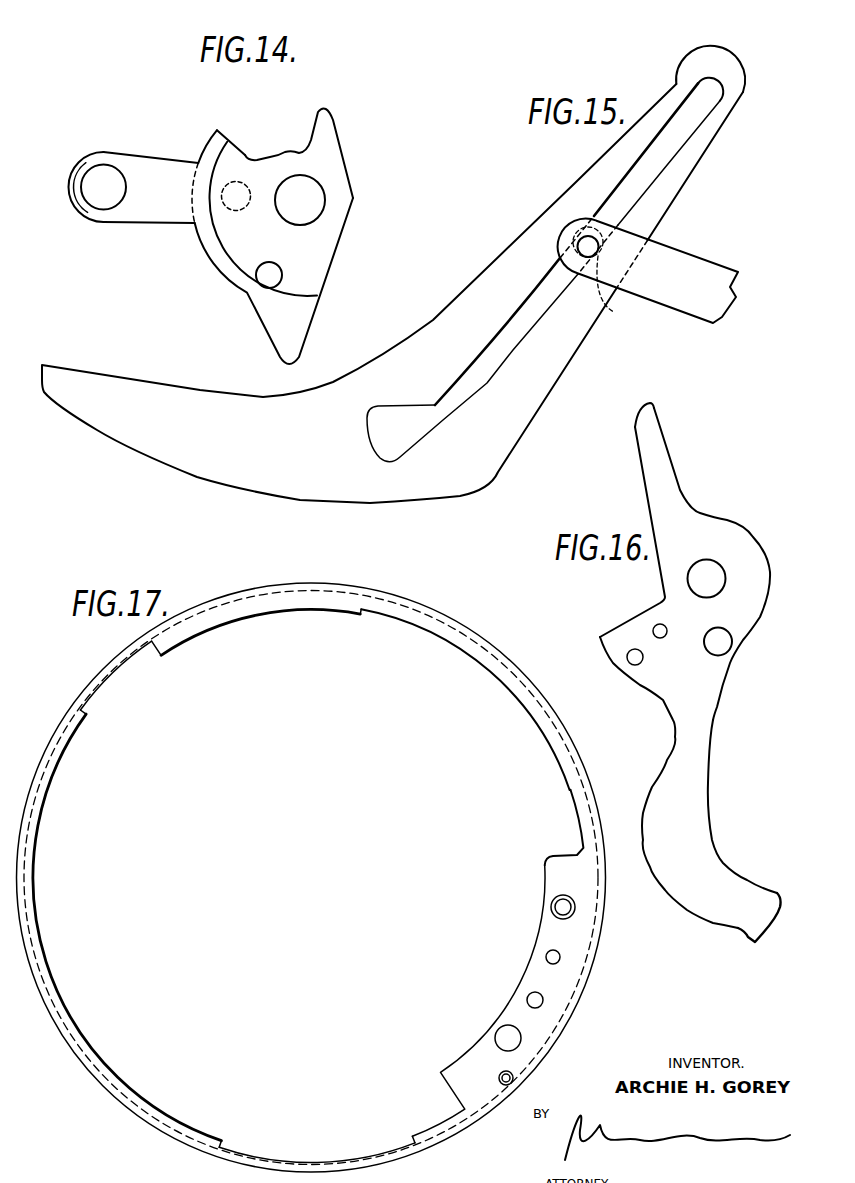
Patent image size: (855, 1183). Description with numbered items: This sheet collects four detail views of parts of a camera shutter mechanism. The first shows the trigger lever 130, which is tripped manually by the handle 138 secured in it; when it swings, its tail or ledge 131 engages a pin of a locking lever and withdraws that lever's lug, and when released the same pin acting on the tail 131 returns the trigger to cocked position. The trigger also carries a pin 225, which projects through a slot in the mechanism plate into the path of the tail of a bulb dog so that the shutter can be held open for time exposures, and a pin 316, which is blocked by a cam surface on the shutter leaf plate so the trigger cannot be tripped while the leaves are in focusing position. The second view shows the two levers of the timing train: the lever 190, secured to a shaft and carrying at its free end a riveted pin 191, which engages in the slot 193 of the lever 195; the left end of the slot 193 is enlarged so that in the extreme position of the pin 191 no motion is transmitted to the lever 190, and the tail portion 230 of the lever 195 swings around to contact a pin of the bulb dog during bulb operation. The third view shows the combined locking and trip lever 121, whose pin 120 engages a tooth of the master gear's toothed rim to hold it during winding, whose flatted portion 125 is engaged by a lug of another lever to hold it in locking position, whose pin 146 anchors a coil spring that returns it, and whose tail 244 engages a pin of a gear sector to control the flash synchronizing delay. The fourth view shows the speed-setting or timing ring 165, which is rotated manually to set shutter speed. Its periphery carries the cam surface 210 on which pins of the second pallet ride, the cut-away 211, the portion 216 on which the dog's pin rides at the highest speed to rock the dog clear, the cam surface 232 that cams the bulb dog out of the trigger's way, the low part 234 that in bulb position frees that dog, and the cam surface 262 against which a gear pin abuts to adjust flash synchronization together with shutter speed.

In FIG. 14, the trigger lever 130 is at (330, 223).
In FIG. 14, the ledge or tail of the trigger 131 is at (317, 120).
In FIG. 14, the handle 138 is at (101, 152).
In FIG. 14, the pin on the trigger lever 316 is at (237, 211).
In FIG. 14, the pin of the trigger 225 is at (271, 266).
In FIG. 15, the tail portion of the lever 230 is at (210, 478).
In FIG. 15, the lever 195 is at (731, 105).
In FIG. 15, the slot 193 is at (658, 168).
In FIG. 15, the lever 190 is at (673, 263).
In FIG. 15, the pin 191 is at (613, 308).
In FIG. 16, the pin 120 is at (723, 647).
In FIG. 16, the tail of the lever 244 is at (642, 440).
In FIG. 16, the pin 146 is at (632, 648).
In FIG. 16, the lever 121 is at (690, 775).
In FIG. 16, the flatted portion or ledge 125 is at (748, 940).
In FIG. 17, the cam surface 210 is at (497, 678).
In FIG. 17, the speed-setting ring 165 is at (50, 968).
In FIG. 17, the cam surface 262 is at (151, 643).
In FIG. 17, the cut-away portion 211 is at (580, 822).
In FIG. 17, the portion of the timing ring 216 is at (413, 1140).
In FIG. 17, the cam surface 232 is at (160, 1113).
In FIG. 17, the low part of the timing ring 234 is at (283, 1160).